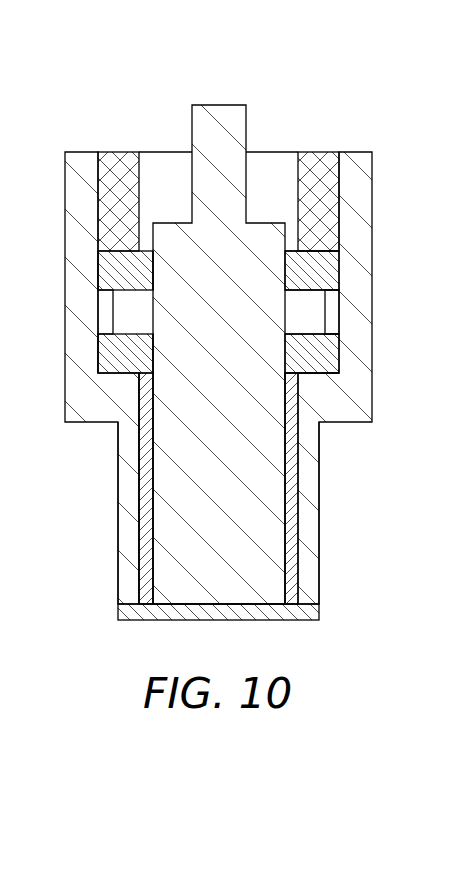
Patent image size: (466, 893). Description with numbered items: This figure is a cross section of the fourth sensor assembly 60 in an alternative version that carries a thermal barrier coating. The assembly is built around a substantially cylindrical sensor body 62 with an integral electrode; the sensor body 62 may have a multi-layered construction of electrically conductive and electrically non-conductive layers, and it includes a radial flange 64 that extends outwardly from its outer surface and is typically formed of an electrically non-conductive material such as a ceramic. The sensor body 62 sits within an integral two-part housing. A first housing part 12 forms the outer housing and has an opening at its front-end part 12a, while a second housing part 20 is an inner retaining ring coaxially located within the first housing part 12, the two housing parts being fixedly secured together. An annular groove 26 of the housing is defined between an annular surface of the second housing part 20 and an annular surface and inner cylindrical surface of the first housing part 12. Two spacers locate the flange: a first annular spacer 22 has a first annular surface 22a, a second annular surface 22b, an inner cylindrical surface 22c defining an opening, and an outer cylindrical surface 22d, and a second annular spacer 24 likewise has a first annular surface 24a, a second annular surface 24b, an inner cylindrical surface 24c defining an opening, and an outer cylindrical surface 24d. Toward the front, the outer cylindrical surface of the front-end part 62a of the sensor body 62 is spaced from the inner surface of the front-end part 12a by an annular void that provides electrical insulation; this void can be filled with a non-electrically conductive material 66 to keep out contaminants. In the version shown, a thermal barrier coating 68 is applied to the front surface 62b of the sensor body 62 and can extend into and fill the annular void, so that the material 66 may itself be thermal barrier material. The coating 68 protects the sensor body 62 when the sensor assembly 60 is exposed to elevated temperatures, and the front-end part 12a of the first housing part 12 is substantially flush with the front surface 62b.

The fourth sensor assembly 60 is at (44, 128).
The first housing part 12 is at (362, 197).
The front-end part of the first housing part 12a is at (310, 528).
The second housing part 20 is at (118, 197).
The second annular spacer 24 is at (325, 268).
The first annular surface of the second annular spacer 24a is at (326, 290).
The second annular surface of the second annular spacer 24b is at (326, 253).
The inner cylindrical surface of the second annular spacer 24c is at (98, 270).
The outer cylindrical surface of the second annular spacer 24d is at (153, 270).
The annular groove 26 is at (330, 312).
The radial flange 64 is at (132, 315).
The first annular spacer 22 is at (325, 357).
The first annular surface of the first annular spacer 22a is at (326, 373).
The second annular surface of the first annular spacer 22b is at (326, 335).
The inner cylindrical surface of the first annular spacer 22c is at (98, 353).
The outer cylindrical surface of the first annular spacer 22d is at (153, 353).
The sensor body 62 is at (265, 453).
The front-end part of the sensor body 62a is at (183, 513).
The front surface of the sensor body 62b is at (235, 606).
The non-electrically conductive material 66 is at (146, 470).
The thermal barrier coating 68 is at (310, 612).